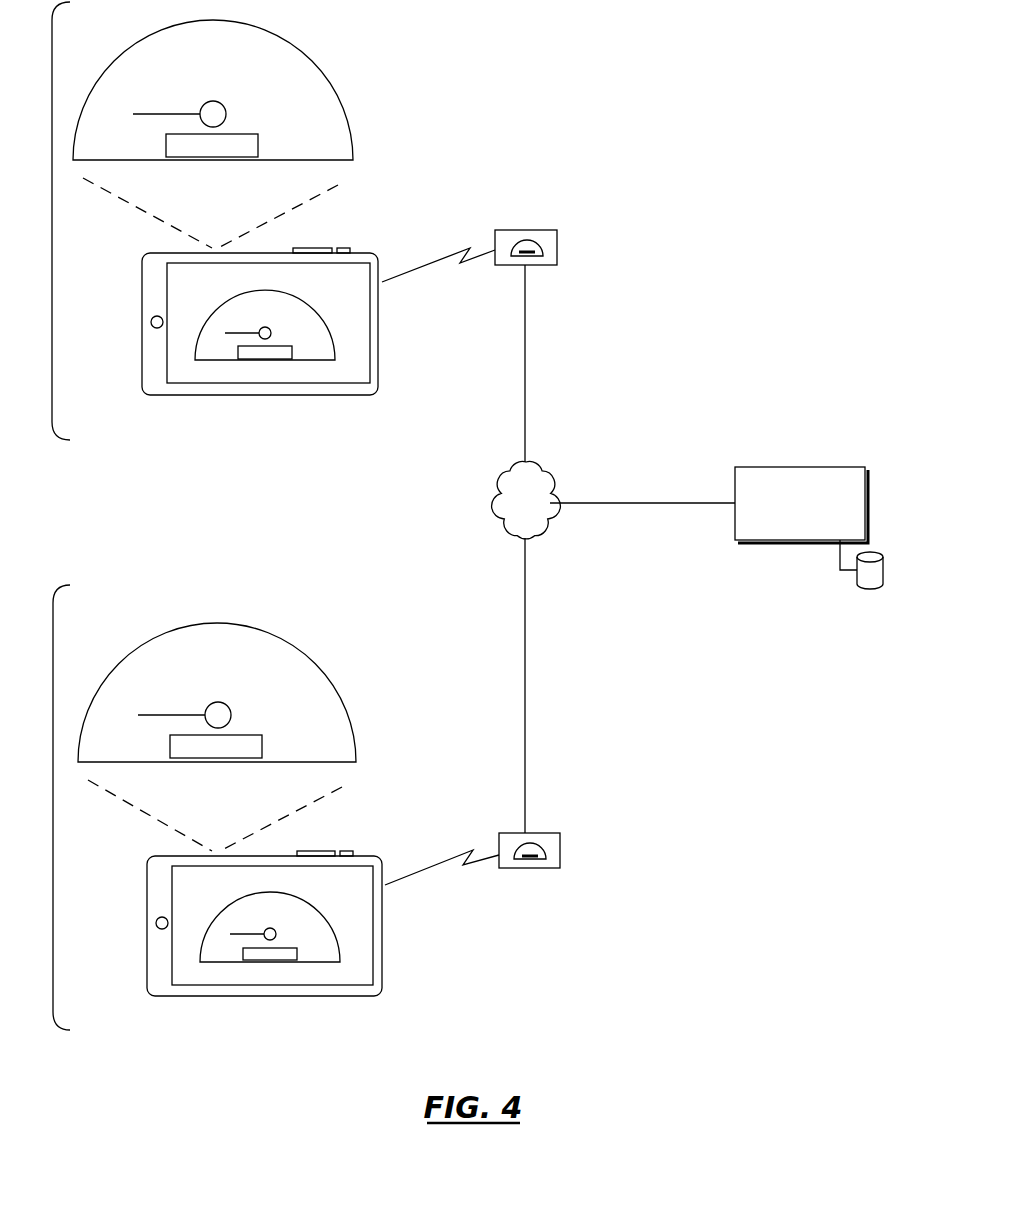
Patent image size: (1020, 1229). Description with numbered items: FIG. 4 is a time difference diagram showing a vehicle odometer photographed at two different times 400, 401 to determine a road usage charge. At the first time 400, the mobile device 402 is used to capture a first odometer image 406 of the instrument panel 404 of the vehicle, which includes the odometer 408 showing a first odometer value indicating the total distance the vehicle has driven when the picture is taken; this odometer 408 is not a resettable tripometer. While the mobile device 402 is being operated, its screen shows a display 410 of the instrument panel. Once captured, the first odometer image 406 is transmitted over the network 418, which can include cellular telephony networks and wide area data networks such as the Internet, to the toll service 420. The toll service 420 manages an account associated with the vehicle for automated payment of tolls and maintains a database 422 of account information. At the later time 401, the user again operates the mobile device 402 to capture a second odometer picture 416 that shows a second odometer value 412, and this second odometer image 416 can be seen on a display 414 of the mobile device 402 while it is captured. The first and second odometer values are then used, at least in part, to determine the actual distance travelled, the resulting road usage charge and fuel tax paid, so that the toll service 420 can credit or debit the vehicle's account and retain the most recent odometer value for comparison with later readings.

The first time 400 is at (36, 221).
The second time 401 is at (37, 807).
The mobile device 402 is at (307, 395).
The instrument panel 404 is at (343, 108).
The first odometer image 406 is at (557, 248).
The odometer 408 is at (203, 158).
The display of the instrument panel 410 is at (255, 362).
The second odometer value 412 is at (232, 762).
The display of the mobile device 414 is at (274, 960).
The second odometer picture 416 is at (535, 868).
The network 418 is at (547, 532).
The toll service 420 is at (803, 467).
The database 422 is at (870, 590).